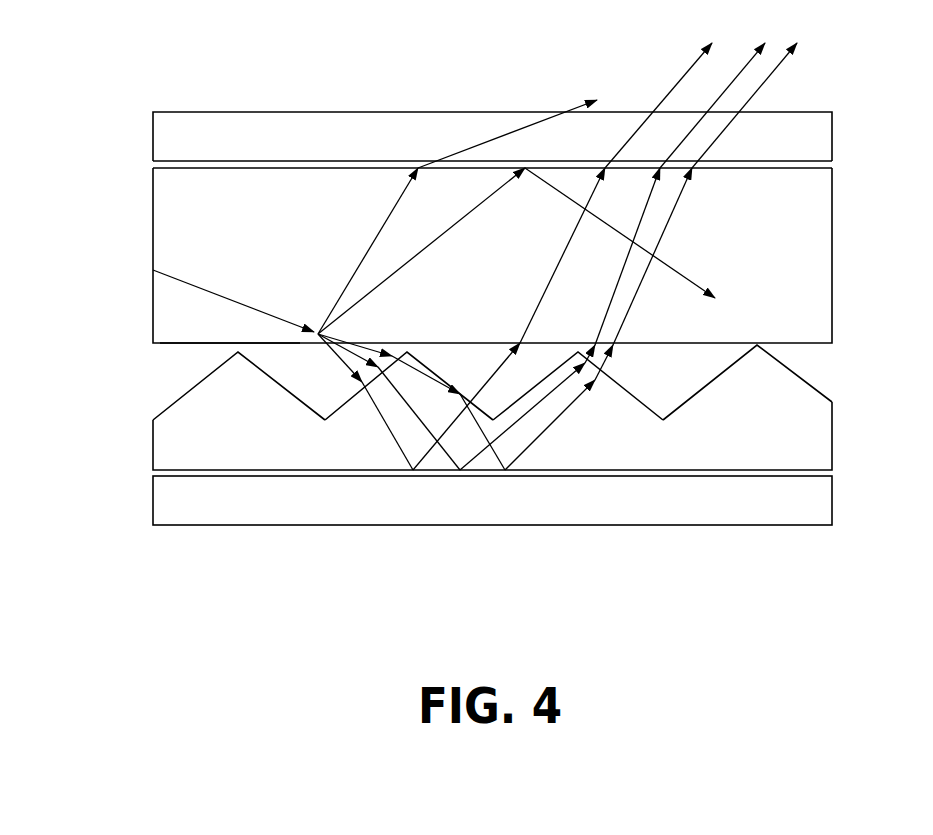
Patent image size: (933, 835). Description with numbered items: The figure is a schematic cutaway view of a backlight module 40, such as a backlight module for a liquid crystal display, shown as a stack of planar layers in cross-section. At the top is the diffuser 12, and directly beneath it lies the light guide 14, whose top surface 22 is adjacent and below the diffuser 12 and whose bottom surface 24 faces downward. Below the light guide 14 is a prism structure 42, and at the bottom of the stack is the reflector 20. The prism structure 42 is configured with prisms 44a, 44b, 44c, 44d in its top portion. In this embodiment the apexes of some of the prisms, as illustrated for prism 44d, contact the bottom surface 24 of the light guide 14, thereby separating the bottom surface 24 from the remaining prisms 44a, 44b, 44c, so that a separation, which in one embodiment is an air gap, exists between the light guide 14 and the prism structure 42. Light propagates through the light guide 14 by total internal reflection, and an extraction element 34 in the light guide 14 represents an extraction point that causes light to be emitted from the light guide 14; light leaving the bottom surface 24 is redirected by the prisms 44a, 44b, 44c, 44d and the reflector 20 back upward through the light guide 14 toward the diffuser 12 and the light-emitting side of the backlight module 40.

The diffuser 12 is at (153, 120).
The top surface 22 is at (168, 167).
The light guide 14 is at (153, 228).
The extraction element 34 is at (318, 334).
The bottom surface 24 is at (180, 343).
The prism 44a is at (232, 395).
The prism 44b is at (412, 385).
The prism 44c is at (605, 400).
The prism 44d is at (780, 380).
The prism structure 42 is at (487, 407).
The reflector 20 is at (153, 507).
The backlight module 40 is at (756, 602).